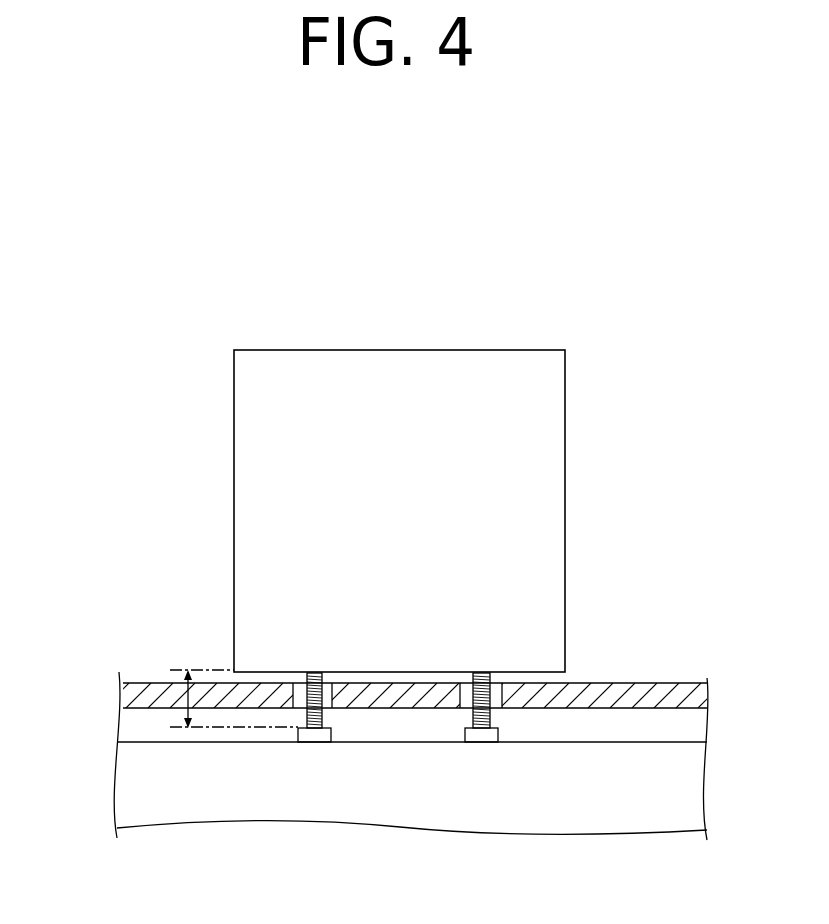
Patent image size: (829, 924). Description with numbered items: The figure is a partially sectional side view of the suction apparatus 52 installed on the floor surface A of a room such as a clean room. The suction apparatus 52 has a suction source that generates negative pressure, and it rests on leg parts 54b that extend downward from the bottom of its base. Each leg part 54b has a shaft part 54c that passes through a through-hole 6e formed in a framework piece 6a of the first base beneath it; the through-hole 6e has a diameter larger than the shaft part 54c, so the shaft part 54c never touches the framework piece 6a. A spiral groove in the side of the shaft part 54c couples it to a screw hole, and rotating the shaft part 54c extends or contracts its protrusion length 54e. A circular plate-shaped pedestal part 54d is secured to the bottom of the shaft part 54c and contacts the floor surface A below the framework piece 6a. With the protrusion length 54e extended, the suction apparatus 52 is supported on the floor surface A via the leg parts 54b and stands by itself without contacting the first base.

The suction apparatus 52 is at (389, 350).
The framework piece 6a is at (650, 690).
The floor surface A is at (660, 742).
The through-hole 6e is at (300, 680).
The shaft part 54c is at (314, 682).
The leg part 54b is at (301, 747).
The pedestal part 54d is at (475, 743).
The protrusion length 54e is at (188, 696).